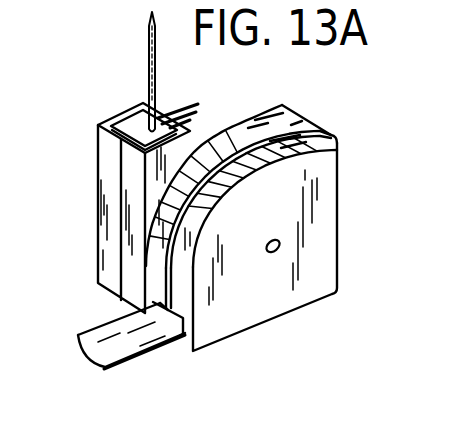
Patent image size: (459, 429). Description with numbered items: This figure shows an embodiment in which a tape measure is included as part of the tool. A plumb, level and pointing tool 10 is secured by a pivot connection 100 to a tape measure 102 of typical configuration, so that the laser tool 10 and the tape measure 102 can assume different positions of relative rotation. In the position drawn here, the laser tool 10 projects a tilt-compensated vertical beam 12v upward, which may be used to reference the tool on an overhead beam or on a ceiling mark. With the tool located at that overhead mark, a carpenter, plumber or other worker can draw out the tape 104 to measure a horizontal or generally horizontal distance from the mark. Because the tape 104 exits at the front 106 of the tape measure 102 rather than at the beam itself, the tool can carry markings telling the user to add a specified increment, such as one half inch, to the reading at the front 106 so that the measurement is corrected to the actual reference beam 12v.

The plumb, level and pointing tool 10 is at (108, 121).
The tilt-compensated vertical beam 12v is at (147, 88).
The pivot connection 100 is at (266, 252).
The tape measure 102 is at (310, 133).
The tape 104 is at (137, 344).
The front of the tape measure 106 is at (170, 320).